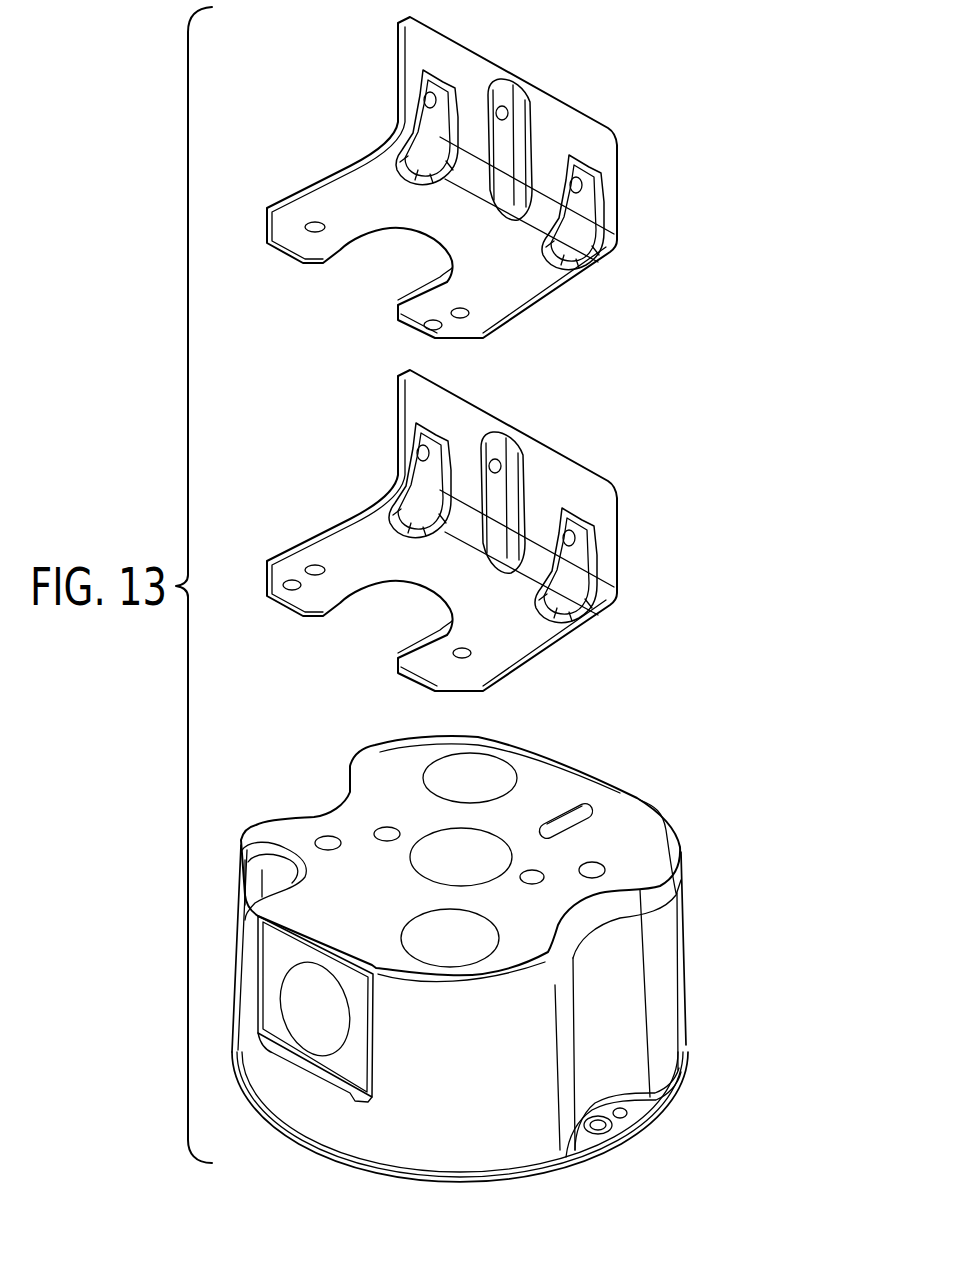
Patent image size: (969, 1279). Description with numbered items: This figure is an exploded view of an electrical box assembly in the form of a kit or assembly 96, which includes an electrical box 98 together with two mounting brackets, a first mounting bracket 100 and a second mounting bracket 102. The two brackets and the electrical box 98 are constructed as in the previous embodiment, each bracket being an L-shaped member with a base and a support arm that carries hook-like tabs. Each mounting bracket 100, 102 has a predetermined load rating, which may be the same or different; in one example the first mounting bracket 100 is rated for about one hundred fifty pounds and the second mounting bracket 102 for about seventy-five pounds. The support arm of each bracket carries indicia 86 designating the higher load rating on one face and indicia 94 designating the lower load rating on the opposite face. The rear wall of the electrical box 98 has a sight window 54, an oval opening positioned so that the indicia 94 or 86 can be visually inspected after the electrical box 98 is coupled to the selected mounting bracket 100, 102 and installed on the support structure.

The sight window 54 is at (594, 811).
The indicia 86 is at (362, 195).
The indicia 94 is at (357, 548).
The kit or assembly 96 is at (640, 449).
The electrical box 98 is at (558, 787).
The first mounting bracket 100 is at (620, 535).
The second mounting bracket 102 is at (625, 165).